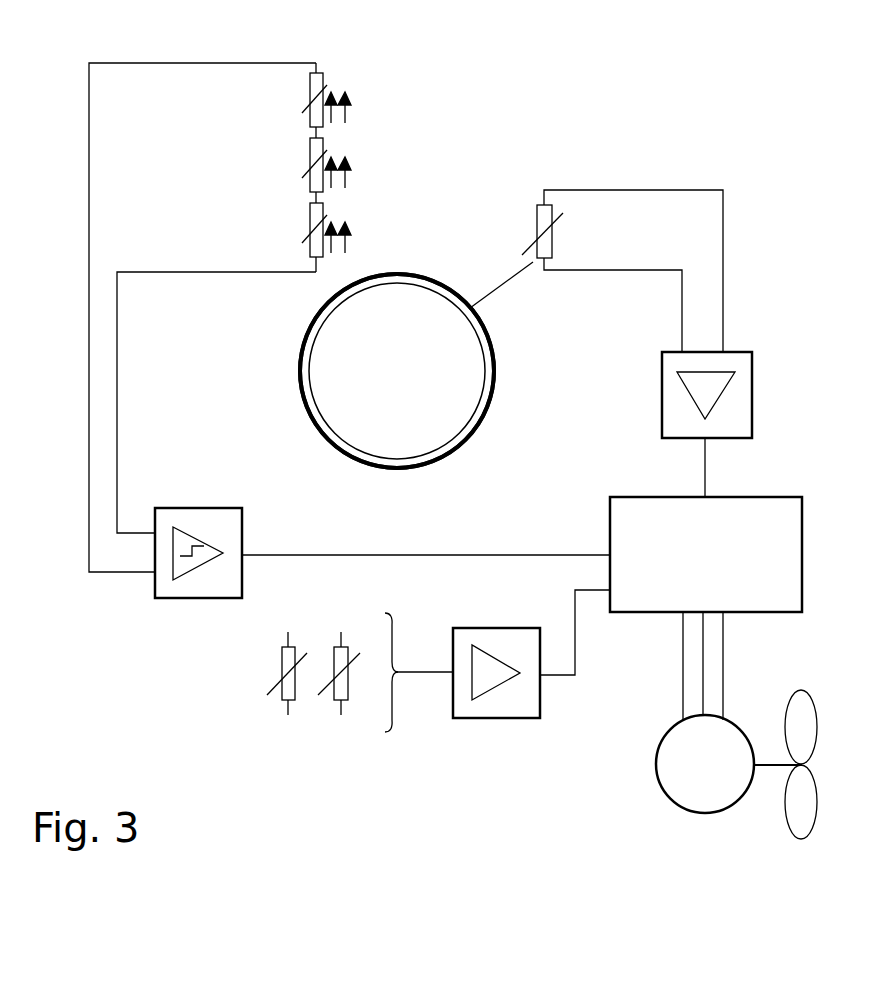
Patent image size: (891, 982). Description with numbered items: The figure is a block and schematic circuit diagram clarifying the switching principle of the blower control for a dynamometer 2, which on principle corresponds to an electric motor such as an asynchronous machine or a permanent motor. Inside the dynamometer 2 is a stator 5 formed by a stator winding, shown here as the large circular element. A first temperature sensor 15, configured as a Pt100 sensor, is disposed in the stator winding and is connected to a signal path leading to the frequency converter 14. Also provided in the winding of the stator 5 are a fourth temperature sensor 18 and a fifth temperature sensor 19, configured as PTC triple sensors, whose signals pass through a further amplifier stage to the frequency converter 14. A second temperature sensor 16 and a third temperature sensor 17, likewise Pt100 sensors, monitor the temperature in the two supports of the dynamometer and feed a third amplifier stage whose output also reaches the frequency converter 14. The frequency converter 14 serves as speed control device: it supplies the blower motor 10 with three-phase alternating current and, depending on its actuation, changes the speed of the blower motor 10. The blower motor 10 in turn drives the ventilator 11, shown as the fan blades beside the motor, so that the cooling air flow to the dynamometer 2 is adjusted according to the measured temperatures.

The dynamometer 2 is at (460, 397).
The stator 5 is at (312, 423).
The blower motor 10 is at (690, 777).
The ventilator 11 is at (809, 764).
The frequency converter 14 is at (782, 578).
The first temperature sensor 15 is at (596, 246).
The second temperature sensor 16 is at (310, 709).
The third temperature sensor 17 is at (339, 673).
The fourth temperature sensor 18 is at (338, 293).
The fifth temperature sensor 19 is at (326, 203).